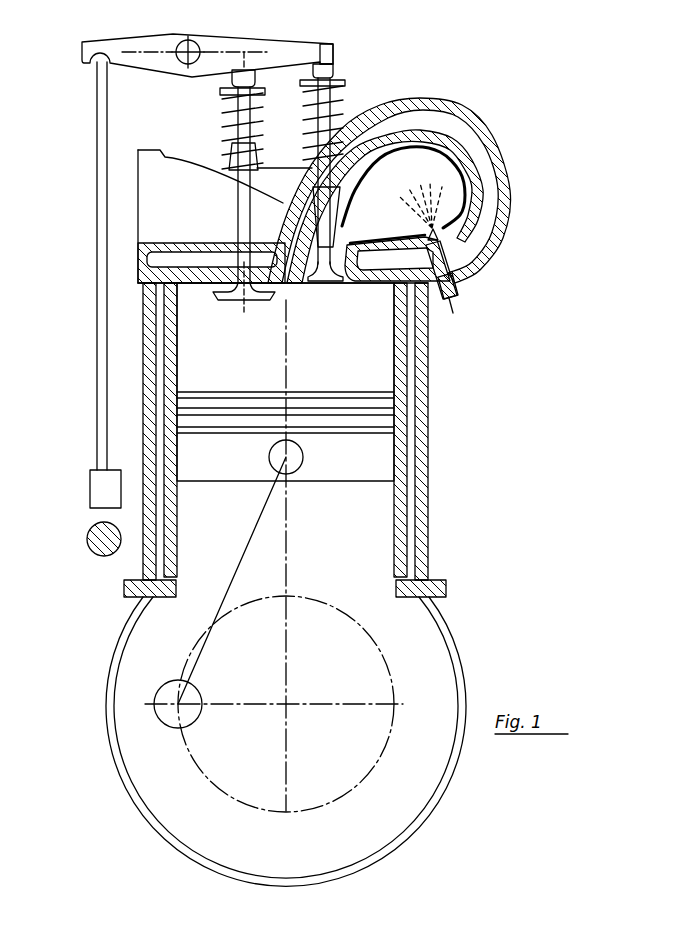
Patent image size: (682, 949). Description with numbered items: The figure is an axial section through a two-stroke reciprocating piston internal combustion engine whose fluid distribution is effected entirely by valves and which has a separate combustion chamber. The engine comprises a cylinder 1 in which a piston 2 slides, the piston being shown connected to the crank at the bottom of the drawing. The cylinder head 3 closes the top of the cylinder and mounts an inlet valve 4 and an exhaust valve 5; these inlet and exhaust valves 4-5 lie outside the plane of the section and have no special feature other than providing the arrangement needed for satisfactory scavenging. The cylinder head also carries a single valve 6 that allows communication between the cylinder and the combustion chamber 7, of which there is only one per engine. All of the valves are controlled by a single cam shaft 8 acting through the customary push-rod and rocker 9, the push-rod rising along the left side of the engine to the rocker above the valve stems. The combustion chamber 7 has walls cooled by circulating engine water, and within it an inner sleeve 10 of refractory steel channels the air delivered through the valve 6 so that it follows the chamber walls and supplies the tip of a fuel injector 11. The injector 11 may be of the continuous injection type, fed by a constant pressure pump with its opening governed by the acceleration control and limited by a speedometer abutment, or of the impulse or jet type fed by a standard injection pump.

The cylinder 1 is at (382, 363).
The piston 2 is at (377, 474).
The cylinder head 3 is at (187, 247).
The inlet valve and exhaust valve 4-5 is at (244, 198).
The inlet valve 4 is at (244, 198).
The exhaust valve 5 is at (240, 297).
The single valve 6 is at (337, 280).
The combustion chamber 7 is at (427, 167).
The cam shaft 8 is at (94, 543).
The rocker 9 is at (152, 46).
The inner sleeve 10 is at (465, 204).
The fuel injector 11 is at (455, 288).